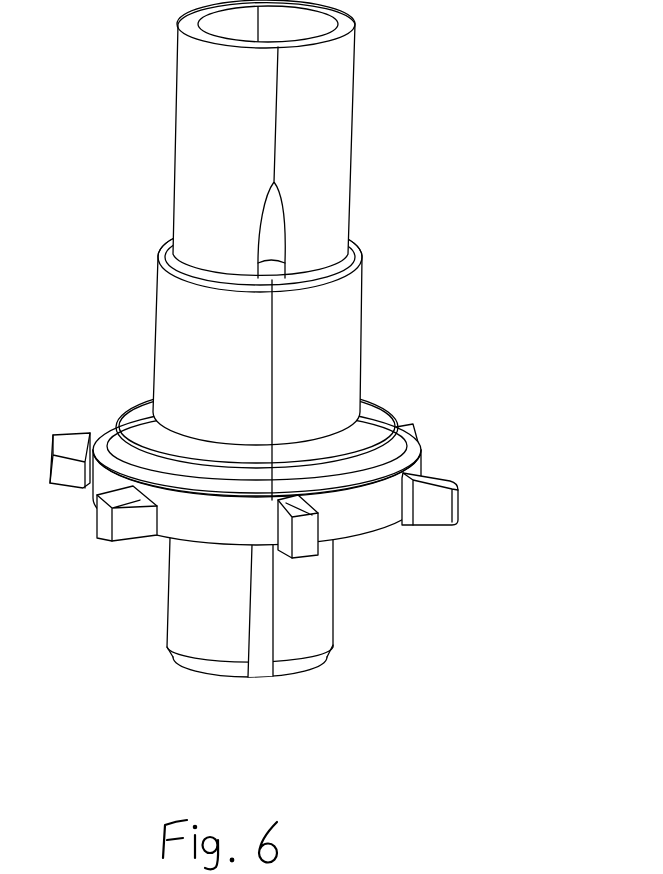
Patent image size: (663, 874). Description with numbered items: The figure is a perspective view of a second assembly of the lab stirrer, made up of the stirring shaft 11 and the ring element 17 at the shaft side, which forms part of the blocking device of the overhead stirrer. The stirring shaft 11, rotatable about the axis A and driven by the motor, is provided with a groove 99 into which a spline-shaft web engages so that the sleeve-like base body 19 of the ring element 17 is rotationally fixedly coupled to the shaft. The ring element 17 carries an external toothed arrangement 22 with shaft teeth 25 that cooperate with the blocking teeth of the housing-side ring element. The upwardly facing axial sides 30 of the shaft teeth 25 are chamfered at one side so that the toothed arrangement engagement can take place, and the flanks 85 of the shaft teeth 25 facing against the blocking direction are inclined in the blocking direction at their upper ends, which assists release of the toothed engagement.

The stirring shaft 11 is at (311, 608).
The ring element at the shaft side 17 is at (423, 295).
The sleeve-like base body 19 is at (184, 362).
The external toothed arrangement 22 is at (282, 488).
The shaft teeth 25 is at (18, 562).
The upwardly facing axial sides of the shaft teeth 30 is at (60, 303).
The flanks of the shaft teeth 85 is at (74, 675).
The groove 99 is at (259, 632).